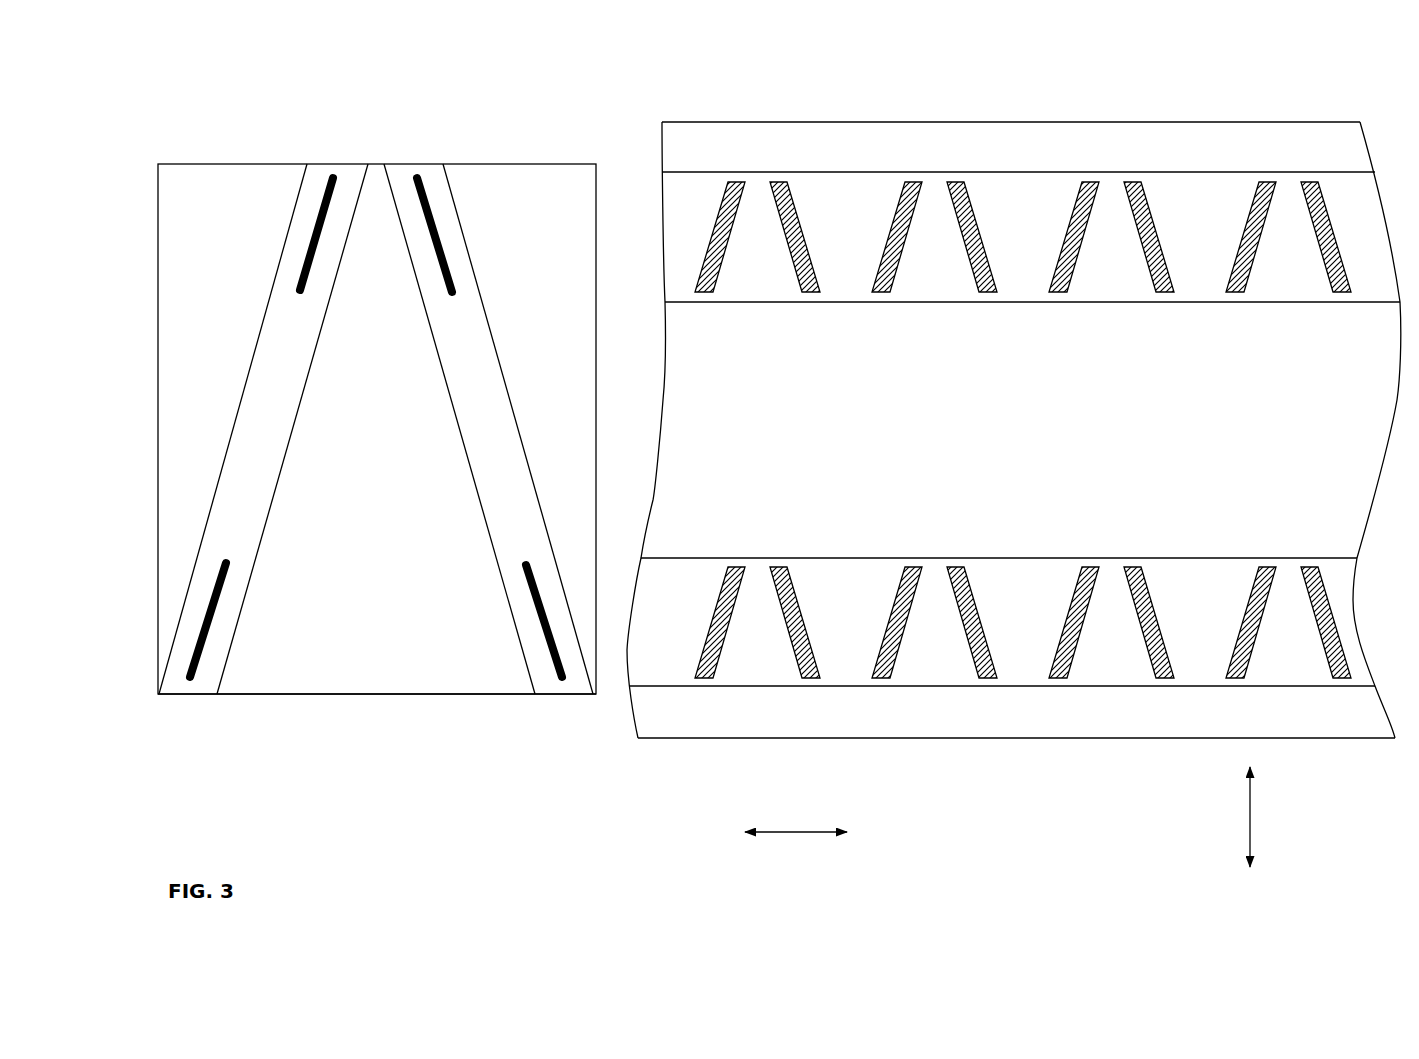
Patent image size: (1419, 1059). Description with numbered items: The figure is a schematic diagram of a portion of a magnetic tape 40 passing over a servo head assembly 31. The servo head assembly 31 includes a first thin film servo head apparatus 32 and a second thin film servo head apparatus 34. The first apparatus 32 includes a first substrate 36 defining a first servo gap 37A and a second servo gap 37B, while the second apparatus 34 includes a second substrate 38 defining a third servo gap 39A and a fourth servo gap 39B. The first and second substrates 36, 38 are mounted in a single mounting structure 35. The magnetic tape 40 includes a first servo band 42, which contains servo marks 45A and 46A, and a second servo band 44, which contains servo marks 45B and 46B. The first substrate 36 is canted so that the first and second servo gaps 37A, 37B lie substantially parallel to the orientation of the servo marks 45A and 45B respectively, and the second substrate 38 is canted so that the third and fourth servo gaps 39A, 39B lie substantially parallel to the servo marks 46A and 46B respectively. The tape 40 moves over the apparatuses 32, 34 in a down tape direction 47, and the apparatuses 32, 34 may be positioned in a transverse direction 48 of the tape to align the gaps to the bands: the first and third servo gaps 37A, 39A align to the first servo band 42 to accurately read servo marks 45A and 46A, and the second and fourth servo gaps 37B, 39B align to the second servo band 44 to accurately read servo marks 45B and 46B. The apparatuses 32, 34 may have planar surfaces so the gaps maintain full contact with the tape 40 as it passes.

The servo head assembly 31 is at (292, 68).
The first thin film servo head apparatus 32 is at (273, 257).
The second thin film servo head apparatus 34 is at (480, 257).
The mounting structure 35 is at (427, 682).
The first substrate 36 is at (268, 378).
The second substrate 38 is at (475, 378).
The first servo gap 37A is at (317, 222).
The second servo gap 37B is at (212, 633).
The third servo gap 39A is at (437, 222).
The fourth servo gap 39B is at (542, 633).
The magnetic tape 40 is at (1180, 121).
The first servo band 42 is at (1233, 312).
The second servo band 44 is at (1198, 547).
The servo mark 45A is at (880, 302).
The servo mark 46A is at (989, 302).
The servo mark 45B is at (913, 556).
The servo mark 46B is at (957, 556).
The down tape direction 47 is at (797, 832).
The transverse direction 48 is at (1250, 817).